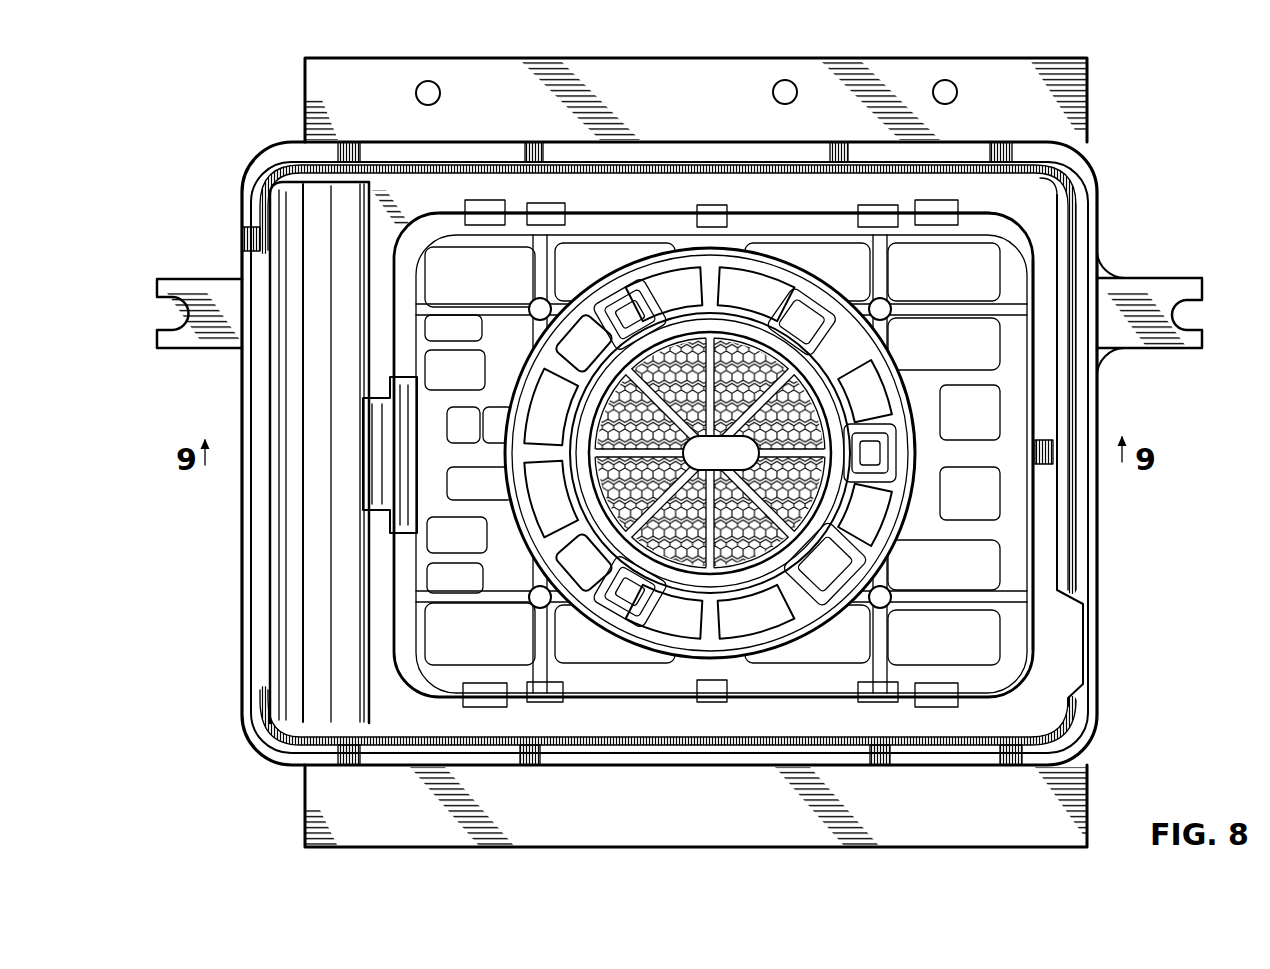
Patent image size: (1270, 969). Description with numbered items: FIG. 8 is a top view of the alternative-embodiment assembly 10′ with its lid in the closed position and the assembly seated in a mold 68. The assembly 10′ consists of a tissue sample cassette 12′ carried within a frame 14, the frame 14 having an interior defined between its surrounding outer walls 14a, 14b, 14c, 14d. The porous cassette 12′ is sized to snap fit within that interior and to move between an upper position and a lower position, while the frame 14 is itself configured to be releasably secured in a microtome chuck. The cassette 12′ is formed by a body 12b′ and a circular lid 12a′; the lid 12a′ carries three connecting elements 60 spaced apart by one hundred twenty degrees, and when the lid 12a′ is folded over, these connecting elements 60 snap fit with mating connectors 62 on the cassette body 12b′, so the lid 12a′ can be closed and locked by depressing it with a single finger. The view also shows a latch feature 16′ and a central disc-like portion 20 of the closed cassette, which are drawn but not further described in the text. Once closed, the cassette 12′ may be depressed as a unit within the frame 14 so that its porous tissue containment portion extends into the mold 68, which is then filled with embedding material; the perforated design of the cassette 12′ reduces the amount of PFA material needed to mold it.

The assembly 10′ is at (1182, 176).
The cassette 12′ is at (770, 193).
The lid 12a′ is at (793, 275).
The body 12b′ is at (1015, 305).
The frame 14 is at (1095, 170).
The outer wall 14a is at (290, 573).
The outer wall 14b is at (309, 167).
The outer wall 14c is at (1085, 548).
The outer wall 14d is at (903, 748).
The latch 16′ is at (443, 388).
The sensor disc 20 is at (790, 548).
The connecting element 60 is at (632, 294).
The connector 62 is at (625, 296).
The mold 68 is at (300, 797).